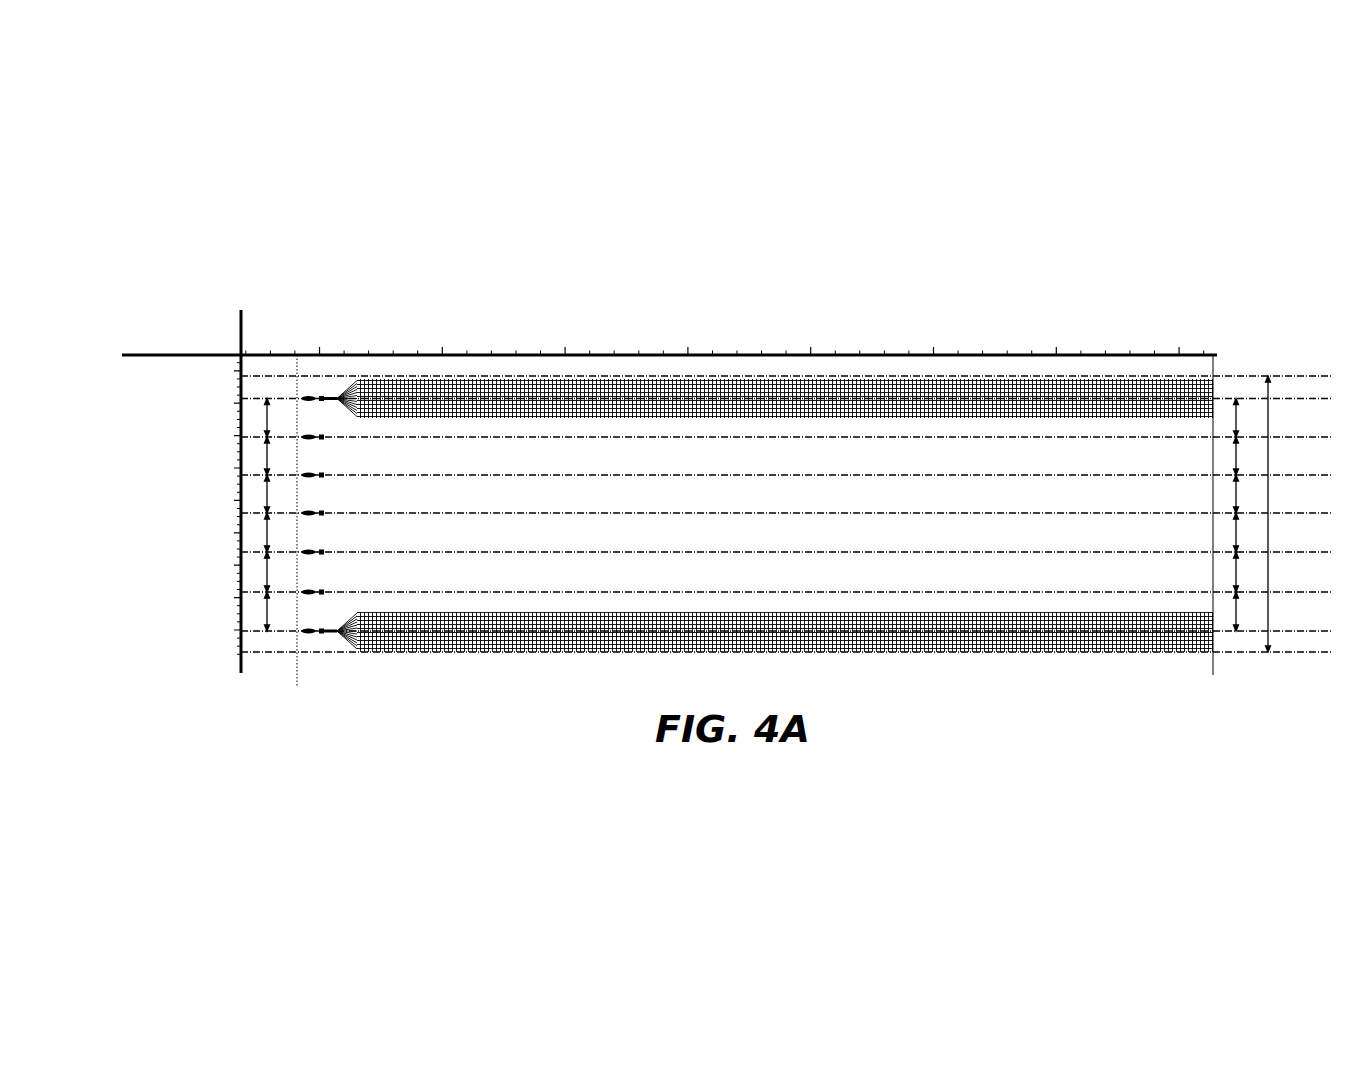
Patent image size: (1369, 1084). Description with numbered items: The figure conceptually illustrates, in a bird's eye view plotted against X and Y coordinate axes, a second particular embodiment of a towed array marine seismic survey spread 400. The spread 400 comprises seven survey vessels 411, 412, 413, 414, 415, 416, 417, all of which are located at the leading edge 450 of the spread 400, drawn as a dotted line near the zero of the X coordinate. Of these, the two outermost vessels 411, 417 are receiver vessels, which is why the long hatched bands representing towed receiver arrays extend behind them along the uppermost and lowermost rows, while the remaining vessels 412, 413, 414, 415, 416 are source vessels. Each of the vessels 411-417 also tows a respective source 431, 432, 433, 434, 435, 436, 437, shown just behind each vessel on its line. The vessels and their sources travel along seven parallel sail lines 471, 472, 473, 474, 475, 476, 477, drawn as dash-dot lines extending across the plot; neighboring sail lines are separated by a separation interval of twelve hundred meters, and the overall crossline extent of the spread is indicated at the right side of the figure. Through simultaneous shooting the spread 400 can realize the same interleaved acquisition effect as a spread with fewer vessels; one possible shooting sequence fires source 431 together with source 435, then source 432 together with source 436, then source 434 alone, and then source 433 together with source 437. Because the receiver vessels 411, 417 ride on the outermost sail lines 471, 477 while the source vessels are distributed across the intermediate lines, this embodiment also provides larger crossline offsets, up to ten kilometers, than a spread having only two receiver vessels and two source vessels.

The spread 400 is at (431, 696).
The survey vessel 411 is at (308, 395).
The survey vessel 412 is at (308, 434).
The survey vessel 413 is at (308, 472).
The survey vessel 414 is at (308, 510).
The survey vessel 415 is at (308, 549).
The survey vessel 416 is at (308, 589).
The survey vessel 417 is at (308, 628).
The source 431 is at (325, 395).
The source 432 is at (325, 434).
The source 433 is at (325, 472).
The source 434 is at (325, 510).
The source 435 is at (325, 549).
The source 436 is at (325, 589).
The source 437 is at (325, 628).
The leading edge 450 is at (298, 671).
The sail line 471 is at (1300, 398).
The sail line 472 is at (1300, 437).
The sail line 473 is at (1300, 475).
The sail line 474 is at (1300, 513).
The sail line 475 is at (1300, 552).
The sail line 476 is at (1300, 592).
The sail line 477 is at (1300, 631).